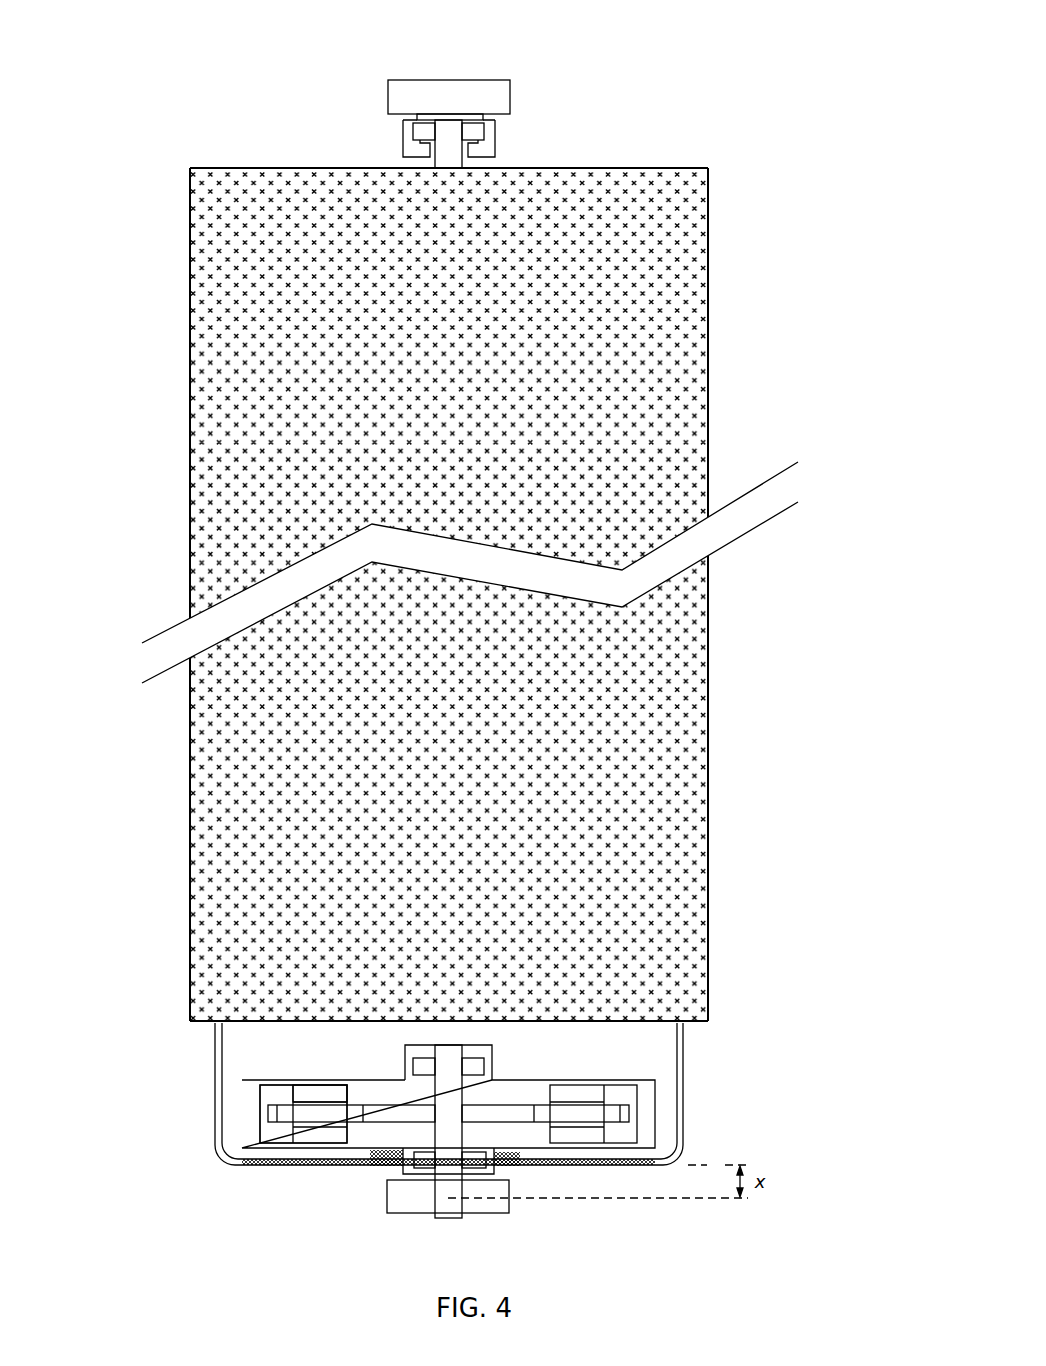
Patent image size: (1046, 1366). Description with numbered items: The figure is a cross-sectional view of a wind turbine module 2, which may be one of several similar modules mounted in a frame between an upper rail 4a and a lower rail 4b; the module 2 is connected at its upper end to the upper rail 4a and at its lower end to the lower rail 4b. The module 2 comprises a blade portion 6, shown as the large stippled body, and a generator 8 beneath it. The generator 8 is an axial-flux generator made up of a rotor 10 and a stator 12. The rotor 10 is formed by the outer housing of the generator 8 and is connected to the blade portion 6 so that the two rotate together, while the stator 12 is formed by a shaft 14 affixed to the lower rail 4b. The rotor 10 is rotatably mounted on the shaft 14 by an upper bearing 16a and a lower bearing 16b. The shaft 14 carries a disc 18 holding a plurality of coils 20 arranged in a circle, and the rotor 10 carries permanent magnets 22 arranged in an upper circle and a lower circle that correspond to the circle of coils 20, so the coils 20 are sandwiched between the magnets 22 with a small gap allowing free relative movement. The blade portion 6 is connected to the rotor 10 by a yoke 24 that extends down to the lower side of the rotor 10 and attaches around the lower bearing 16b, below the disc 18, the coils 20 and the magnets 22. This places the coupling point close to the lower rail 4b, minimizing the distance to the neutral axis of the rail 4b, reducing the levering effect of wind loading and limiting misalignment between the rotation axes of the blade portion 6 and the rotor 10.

The wind turbine module 2 is at (692, 128).
The upper rail 4a is at (448, 108).
The lower rail 4b is at (415, 1195).
The blade portion 6 is at (210, 363).
The generator 8 is at (648, 1068).
The rotor 10 is at (247, 1127).
The stator 12 is at (404, 1127).
The shaft 14 is at (453, 1207).
The upper bearing 16a is at (473, 1068).
The lower bearing 16b is at (470, 1170).
The disc 18 is at (483, 1118).
The coils 20 is at (288, 1117).
The permanent magnets 22 is at (315, 1088).
The yoke 24 is at (217, 1065).